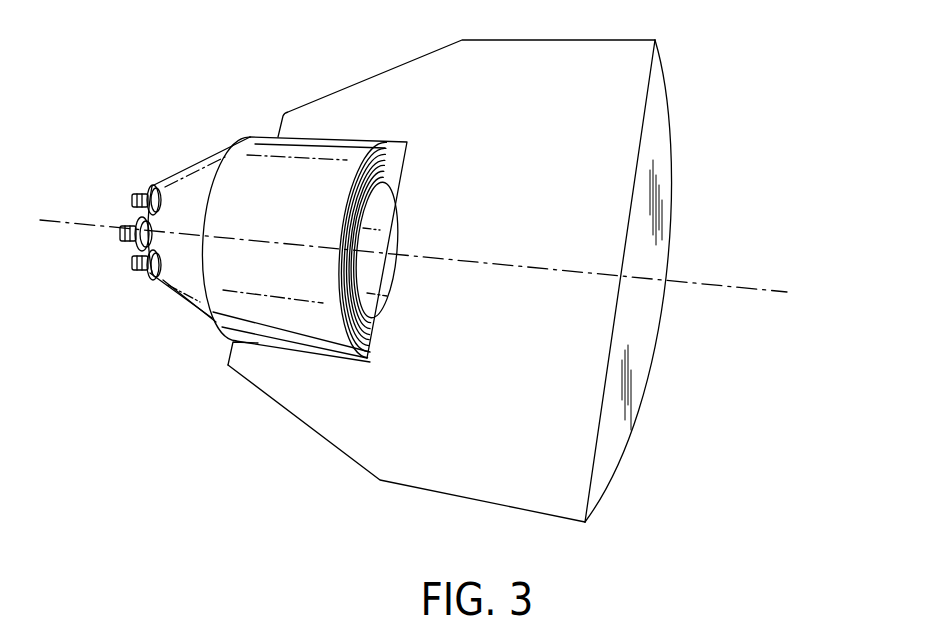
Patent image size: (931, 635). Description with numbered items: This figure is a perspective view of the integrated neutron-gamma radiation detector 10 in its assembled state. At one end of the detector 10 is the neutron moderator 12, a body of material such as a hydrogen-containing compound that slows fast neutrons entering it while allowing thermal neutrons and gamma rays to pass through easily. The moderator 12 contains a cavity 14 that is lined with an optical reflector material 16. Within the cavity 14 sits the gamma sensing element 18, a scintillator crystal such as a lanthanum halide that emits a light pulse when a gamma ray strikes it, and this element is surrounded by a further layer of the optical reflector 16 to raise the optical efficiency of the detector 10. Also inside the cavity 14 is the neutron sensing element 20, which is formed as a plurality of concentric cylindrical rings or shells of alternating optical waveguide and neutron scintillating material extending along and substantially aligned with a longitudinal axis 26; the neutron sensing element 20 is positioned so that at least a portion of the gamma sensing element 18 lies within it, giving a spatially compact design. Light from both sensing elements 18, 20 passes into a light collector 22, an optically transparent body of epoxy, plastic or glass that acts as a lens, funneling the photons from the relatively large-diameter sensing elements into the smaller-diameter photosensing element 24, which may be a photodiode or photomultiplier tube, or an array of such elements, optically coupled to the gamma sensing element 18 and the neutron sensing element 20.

The integrated neutron-gamma radiation detector 10 is at (417, 264).
The neutron moderator 12 is at (492, 70).
The cavity 14 is at (272, 340).
The optical reflector material 16 is at (352, 140).
The gamma sensing element 18 is at (378, 215).
The neutron sensing element 20 is at (303, 165).
The light collector 22 is at (192, 180).
The photosensing element 24 is at (132, 193).
The longitudinal axis 26 is at (765, 292).